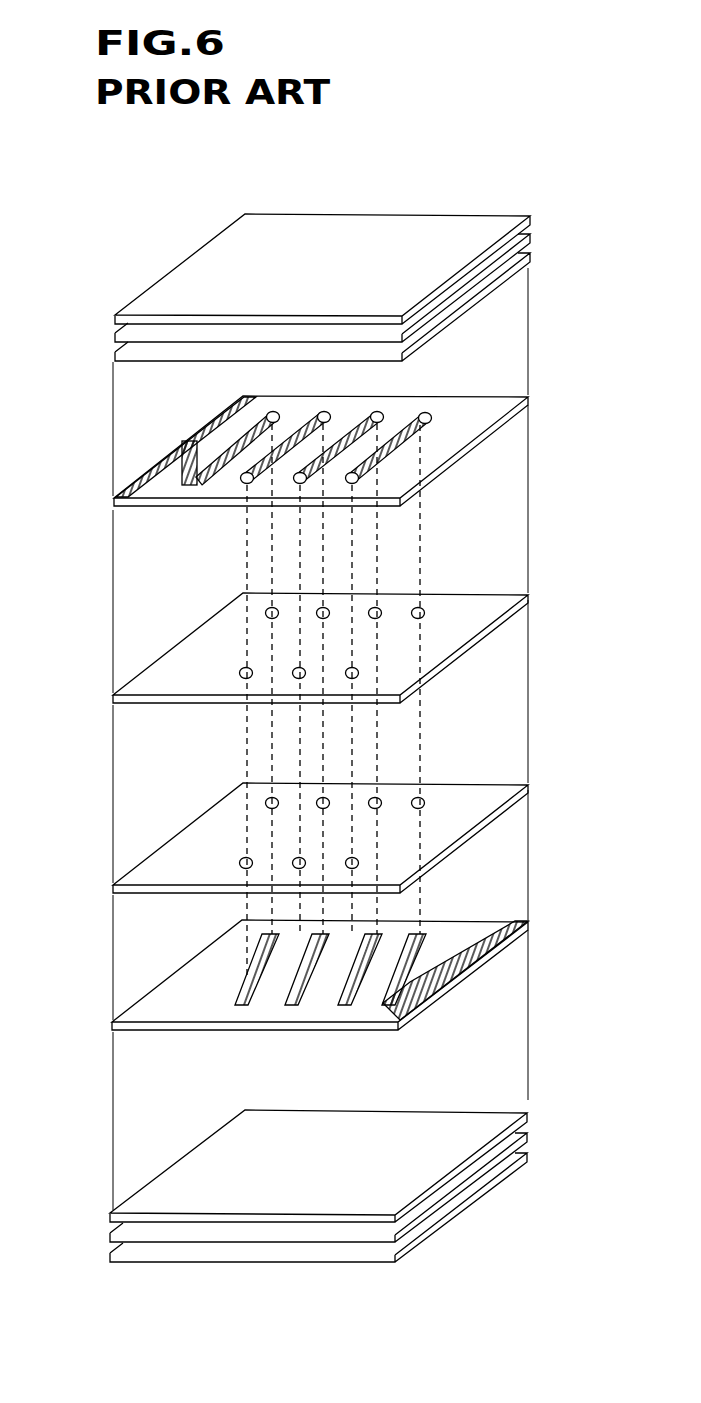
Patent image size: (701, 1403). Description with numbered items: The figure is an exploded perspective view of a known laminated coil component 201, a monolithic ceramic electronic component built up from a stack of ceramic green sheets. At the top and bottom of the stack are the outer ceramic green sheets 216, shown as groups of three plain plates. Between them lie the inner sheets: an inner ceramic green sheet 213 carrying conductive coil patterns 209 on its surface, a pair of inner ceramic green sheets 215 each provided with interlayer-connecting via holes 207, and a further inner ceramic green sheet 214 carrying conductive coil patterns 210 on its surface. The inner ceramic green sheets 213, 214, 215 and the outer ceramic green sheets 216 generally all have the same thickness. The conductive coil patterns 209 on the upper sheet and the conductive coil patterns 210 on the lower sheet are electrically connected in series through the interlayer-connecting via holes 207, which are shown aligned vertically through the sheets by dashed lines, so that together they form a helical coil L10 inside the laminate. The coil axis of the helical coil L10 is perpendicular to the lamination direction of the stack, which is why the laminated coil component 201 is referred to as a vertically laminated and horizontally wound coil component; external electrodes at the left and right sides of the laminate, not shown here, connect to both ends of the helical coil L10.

The laminated coil component 201 is at (195, 194).
The outer ceramic green sheets 216 is at (182, 262).
The inner ceramic green sheet 213 is at (472, 427).
The conductive coil patterns 209 is at (305, 440).
The interlayer-connecting via holes 207 is at (242, 402).
The inner ceramic green sheets 215 is at (468, 625).
The inner ceramic green sheet 214 is at (484, 918).
The conductive coil patterns 210 is at (237, 991).
The helical coil L10 is at (233, 977).